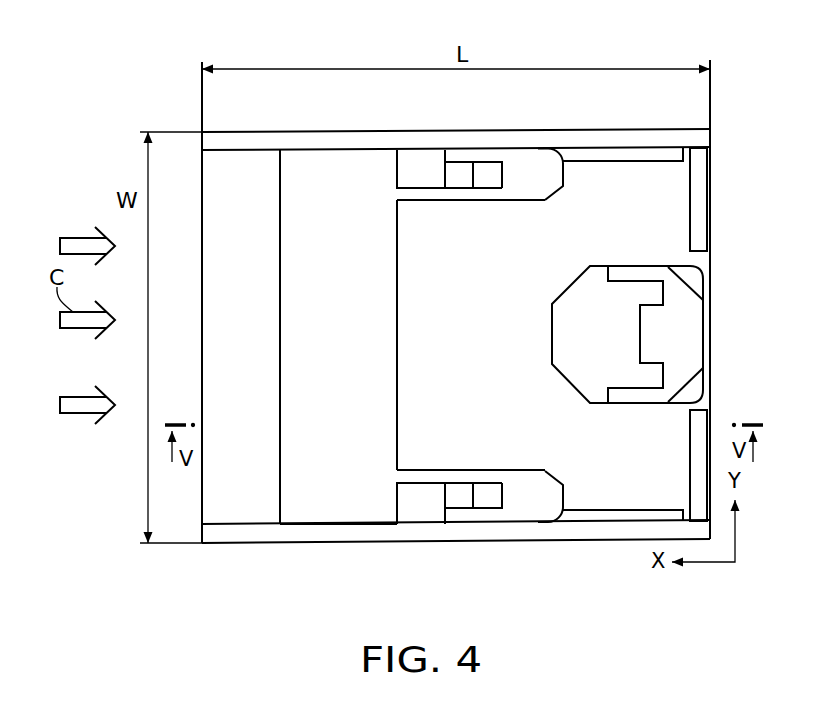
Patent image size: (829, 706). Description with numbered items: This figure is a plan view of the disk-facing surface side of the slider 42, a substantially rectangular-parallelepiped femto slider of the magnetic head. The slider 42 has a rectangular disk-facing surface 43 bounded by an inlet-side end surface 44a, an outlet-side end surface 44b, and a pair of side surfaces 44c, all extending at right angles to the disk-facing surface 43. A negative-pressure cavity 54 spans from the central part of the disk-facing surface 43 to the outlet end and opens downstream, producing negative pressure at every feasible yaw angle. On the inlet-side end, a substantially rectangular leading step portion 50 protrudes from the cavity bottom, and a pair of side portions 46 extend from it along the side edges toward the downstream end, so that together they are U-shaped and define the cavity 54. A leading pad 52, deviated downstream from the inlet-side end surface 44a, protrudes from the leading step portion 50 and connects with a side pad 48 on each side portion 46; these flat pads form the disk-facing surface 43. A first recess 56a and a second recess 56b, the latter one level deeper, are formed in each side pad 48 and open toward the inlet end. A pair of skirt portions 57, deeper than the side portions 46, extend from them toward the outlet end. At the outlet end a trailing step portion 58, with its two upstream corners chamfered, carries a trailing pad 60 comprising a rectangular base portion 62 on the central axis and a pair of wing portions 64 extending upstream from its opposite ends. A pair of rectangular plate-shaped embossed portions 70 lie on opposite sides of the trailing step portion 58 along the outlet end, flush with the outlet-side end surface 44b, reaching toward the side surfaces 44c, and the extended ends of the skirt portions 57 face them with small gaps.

The slider 42 is at (330, 550).
The disk-facing surface 43 is at (297, 490).
The inlet-side end surface 44a is at (202, 288).
The outlet-side end surface 44b is at (712, 371).
The side surfaces 44c is at (611, 141).
The side portions 46 is at (528, 186).
The side pad 48 is at (535, 165).
The leading step portion 50 is at (238, 172).
The leading pad 52 is at (320, 163).
The negative-pressure cavity 54 is at (474, 316).
The first recess 56a is at (491, 170).
The second recess 56b is at (461, 170).
The skirt portions 57 is at (663, 156).
The trailing step portion 58 is at (573, 302).
The trailing pad 60 is at (692, 313).
The base portion 62 is at (690, 348).
The wing portions 64 is at (637, 279).
The embossed portions 70 is at (698, 182).